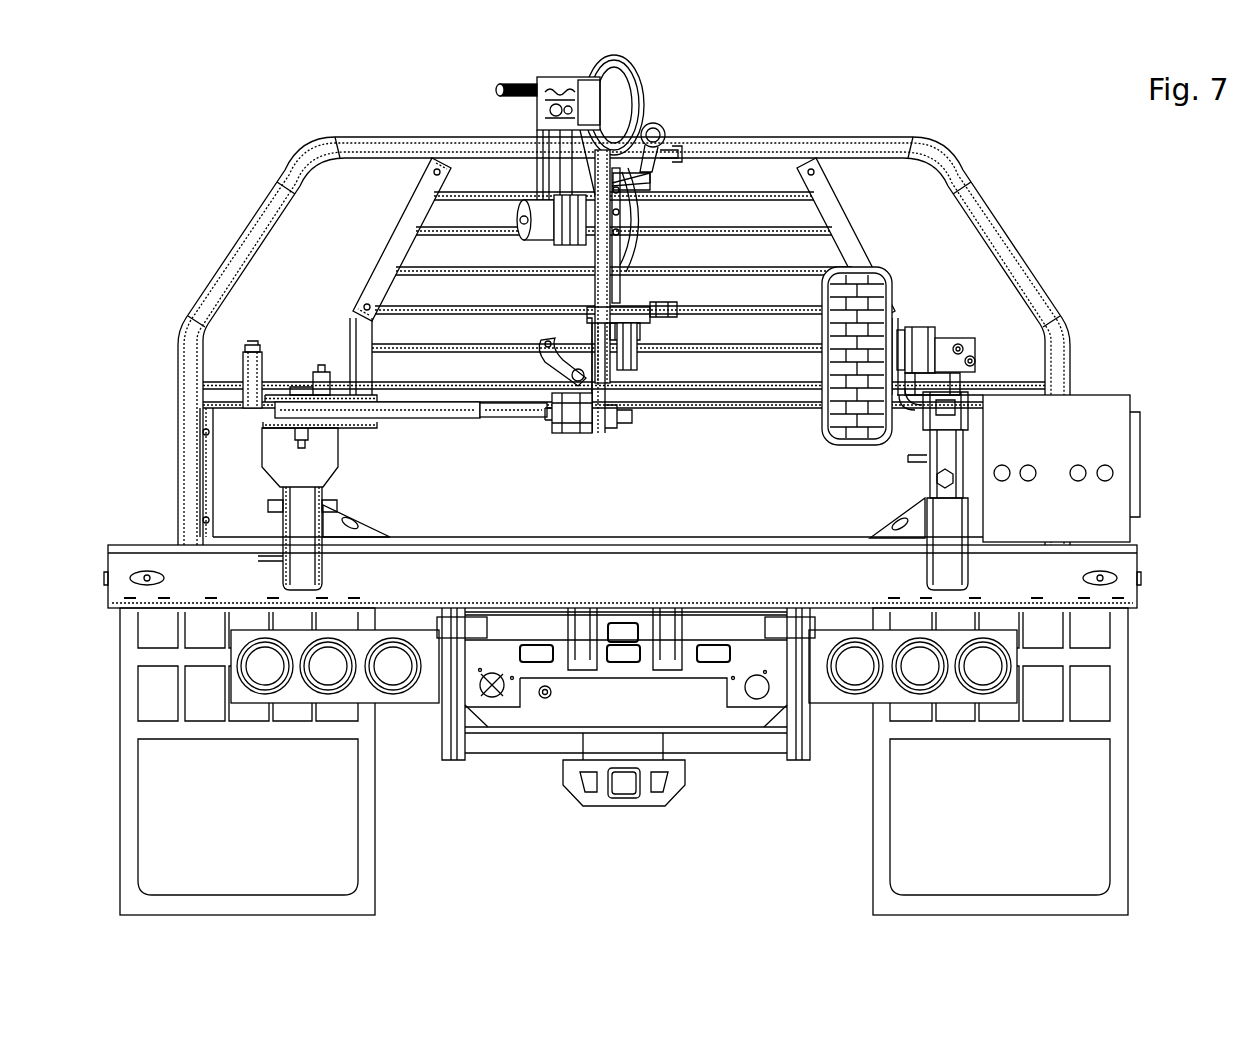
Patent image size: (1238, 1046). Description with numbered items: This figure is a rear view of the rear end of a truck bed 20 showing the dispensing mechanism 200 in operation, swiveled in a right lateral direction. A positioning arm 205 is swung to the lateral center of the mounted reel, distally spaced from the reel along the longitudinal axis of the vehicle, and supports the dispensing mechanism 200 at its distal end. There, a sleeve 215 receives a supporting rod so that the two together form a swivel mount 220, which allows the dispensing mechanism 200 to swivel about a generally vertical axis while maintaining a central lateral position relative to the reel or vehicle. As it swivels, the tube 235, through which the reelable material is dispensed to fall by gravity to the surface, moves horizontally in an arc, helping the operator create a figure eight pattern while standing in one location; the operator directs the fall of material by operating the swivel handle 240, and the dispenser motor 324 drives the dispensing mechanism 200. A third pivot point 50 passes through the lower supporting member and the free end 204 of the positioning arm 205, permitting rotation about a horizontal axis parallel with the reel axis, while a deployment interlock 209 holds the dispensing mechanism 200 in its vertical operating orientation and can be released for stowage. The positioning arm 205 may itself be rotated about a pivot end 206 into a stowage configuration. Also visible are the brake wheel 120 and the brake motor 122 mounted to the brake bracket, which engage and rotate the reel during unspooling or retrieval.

The truck bed 20 is at (185, 570).
The third pivot point 50 is at (612, 416).
The brake wheel 120 is at (872, 266).
The brake motor 122 is at (938, 338).
The dispensing mechanism 200 is at (605, 42).
The free end 204 is at (578, 452).
The positioning arm 205 is at (425, 412).
The pivot end 206 is at (290, 366).
The deployment interlock 209 is at (552, 416).
The sleeve 215 is at (628, 352).
The swivel mount 220 is at (650, 320).
The tube 235 is at (655, 124).
The swivel handle 240 is at (664, 302).
The dispenser motor 324 is at (542, 240).